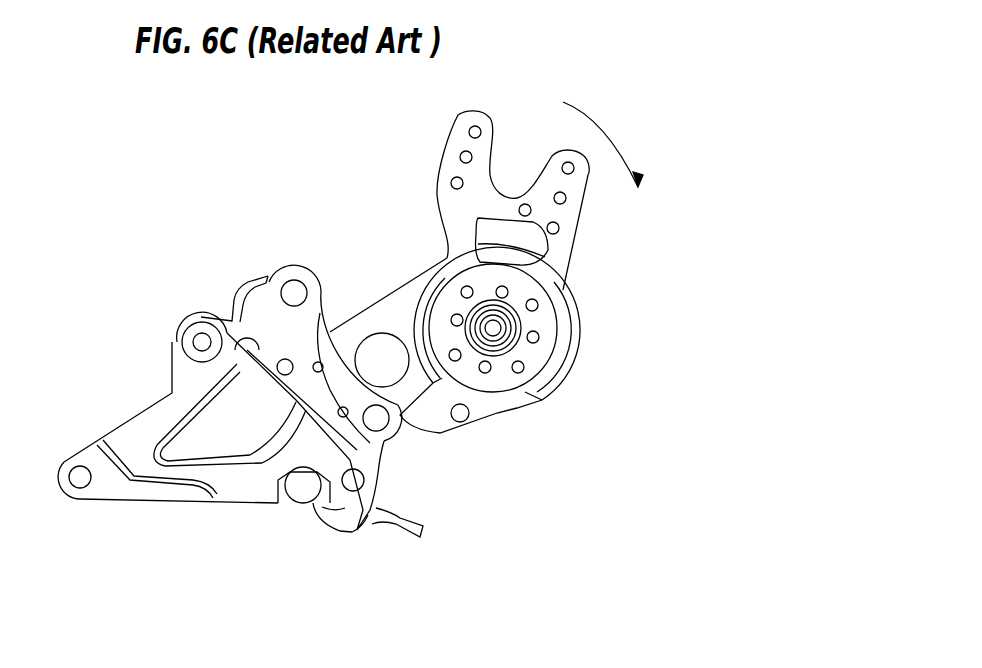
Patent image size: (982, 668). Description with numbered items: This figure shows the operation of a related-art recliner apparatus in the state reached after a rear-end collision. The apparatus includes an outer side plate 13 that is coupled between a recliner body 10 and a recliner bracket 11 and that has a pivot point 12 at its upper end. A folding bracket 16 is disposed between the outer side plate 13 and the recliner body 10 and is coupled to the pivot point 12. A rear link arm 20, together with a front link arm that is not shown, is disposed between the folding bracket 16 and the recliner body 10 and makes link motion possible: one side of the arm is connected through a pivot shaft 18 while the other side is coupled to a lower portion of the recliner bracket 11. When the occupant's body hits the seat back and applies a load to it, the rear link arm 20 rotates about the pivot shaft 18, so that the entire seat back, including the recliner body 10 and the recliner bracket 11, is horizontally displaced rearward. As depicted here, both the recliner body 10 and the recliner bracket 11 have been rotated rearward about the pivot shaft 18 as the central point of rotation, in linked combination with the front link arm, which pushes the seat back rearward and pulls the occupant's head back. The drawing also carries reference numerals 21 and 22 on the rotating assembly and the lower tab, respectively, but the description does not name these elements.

The recliner body 10 is at (458, 143).
The recliner bracket 11 is at (480, 413).
The pivot point 12 is at (195, 342).
The outer side plate 13 is at (128, 441).
The folding bracket 16 is at (260, 305).
The pivot shaft 18 is at (292, 287).
The rear link arm 20 is at (370, 405).
The tensioner pulley 21 is at (500, 326).
The stopper tab 22 is at (327, 517).